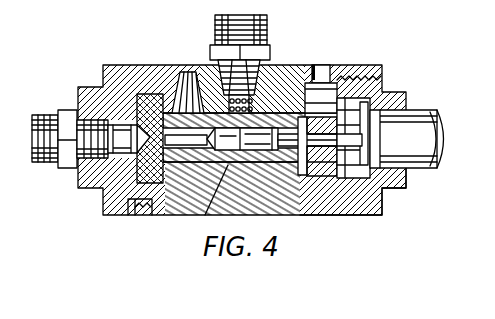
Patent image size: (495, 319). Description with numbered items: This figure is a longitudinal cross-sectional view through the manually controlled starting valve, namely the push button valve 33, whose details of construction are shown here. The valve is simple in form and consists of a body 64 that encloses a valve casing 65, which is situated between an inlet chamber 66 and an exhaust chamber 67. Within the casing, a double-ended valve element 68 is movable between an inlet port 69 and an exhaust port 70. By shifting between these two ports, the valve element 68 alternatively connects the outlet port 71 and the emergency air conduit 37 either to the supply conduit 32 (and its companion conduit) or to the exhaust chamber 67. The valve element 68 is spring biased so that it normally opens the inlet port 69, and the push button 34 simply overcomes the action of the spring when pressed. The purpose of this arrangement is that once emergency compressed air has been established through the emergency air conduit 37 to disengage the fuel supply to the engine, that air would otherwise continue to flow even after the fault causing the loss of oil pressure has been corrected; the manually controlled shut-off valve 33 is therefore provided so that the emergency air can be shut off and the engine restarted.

The conduit 32 is at (34, 165).
The push button valve 33 is at (357, 216).
The push button 34 is at (417, 117).
The emergency air conduit 37 is at (263, 22).
The body 64 is at (283, 110).
The valve casing 65 is at (320, 68).
The inlet chamber 66 is at (170, 62).
The exhaust chamber 67 is at (323, 100).
The double-ended valve element 68 is at (258, 136).
The inlet port 69 is at (158, 183).
The exhaust port 70 is at (299, 165).
The outlet port 71 is at (207, 66).